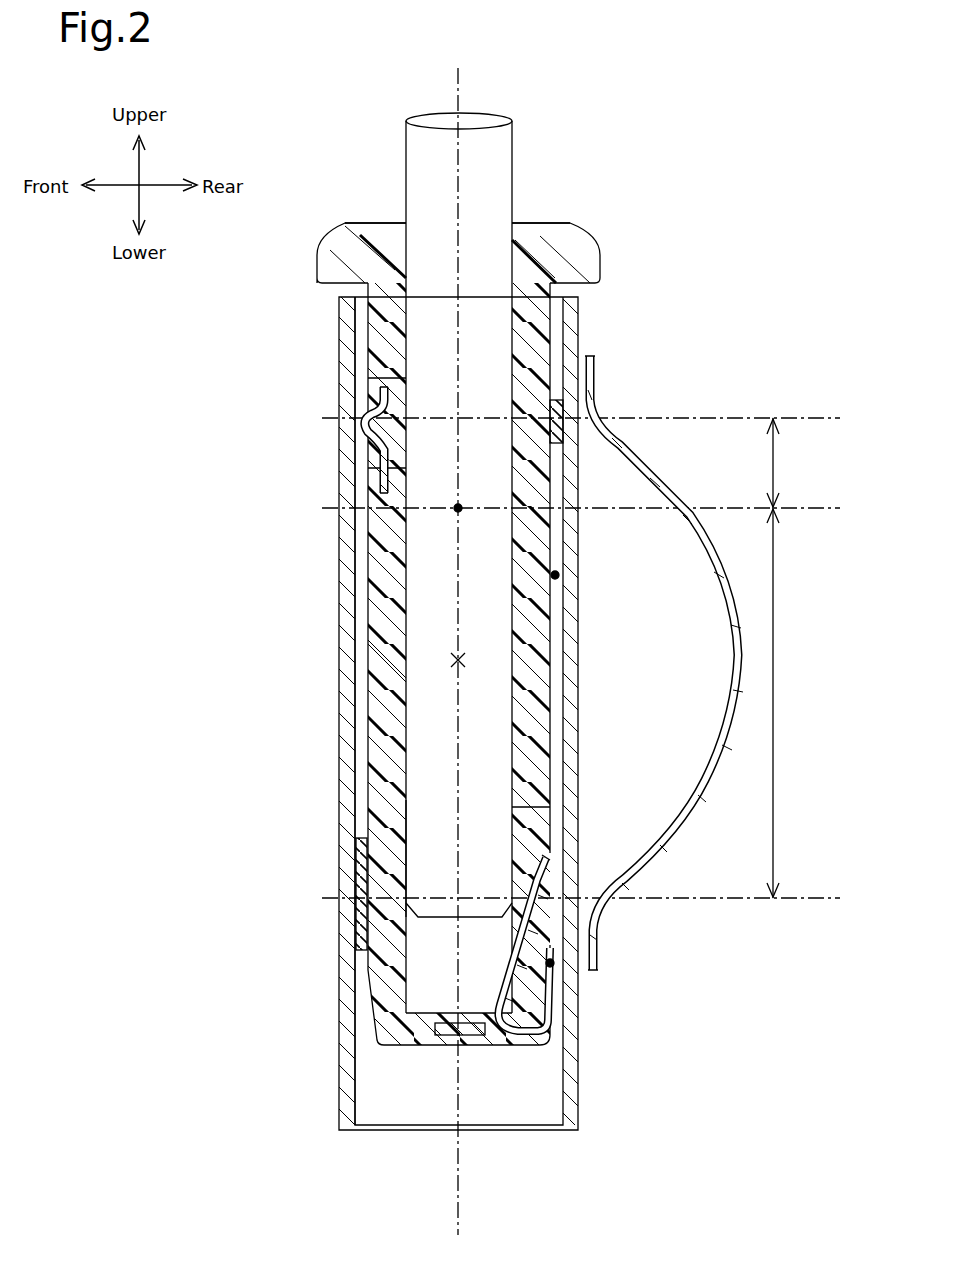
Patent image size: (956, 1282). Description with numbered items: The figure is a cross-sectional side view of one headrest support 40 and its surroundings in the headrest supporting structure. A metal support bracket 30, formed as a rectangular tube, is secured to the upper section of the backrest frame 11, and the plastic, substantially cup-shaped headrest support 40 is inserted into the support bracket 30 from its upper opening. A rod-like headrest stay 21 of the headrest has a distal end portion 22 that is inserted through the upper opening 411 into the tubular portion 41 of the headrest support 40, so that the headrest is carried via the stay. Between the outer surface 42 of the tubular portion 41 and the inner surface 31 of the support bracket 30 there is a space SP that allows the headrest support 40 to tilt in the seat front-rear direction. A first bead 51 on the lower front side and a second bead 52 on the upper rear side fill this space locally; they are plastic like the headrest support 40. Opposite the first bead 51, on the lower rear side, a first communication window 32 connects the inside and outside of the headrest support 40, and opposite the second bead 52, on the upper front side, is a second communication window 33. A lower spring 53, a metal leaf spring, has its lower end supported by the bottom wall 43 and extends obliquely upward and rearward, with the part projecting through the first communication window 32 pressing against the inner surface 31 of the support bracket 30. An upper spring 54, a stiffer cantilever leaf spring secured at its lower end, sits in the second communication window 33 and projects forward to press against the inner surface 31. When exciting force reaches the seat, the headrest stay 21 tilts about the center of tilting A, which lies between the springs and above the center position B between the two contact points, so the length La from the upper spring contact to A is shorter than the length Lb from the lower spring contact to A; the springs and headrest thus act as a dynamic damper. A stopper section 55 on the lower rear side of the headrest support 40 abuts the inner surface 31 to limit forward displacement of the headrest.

The backrest frame 11 is at (683, 497).
The headrest stay 21 is at (422, 730).
The distal end portion 22 is at (416, 801).
The support bracket 30 is at (350, 486).
The inner surface 31 is at (358, 550).
The first communication window 32 is at (550, 820).
The second communication window 33 is at (368, 386).
The headrest support 40 is at (374, 582).
The tubular portion 41 is at (382, 607).
The upper opening 411 is at (406, 216).
The outer surface 42 is at (372, 652).
The bottom wall 43 is at (433, 1046).
The first bead 51 is at (362, 874).
The second bead 52 is at (555, 422).
The lower spring 53 is at (528, 1004).
The upper spring 54 is at (370, 420).
The stopper section 55 is at (553, 963).
The center of tilting A is at (455, 506).
The center position B is at (462, 660).
The space SP is at (558, 575).
The length La is at (786, 463).
The length Lb is at (786, 703).